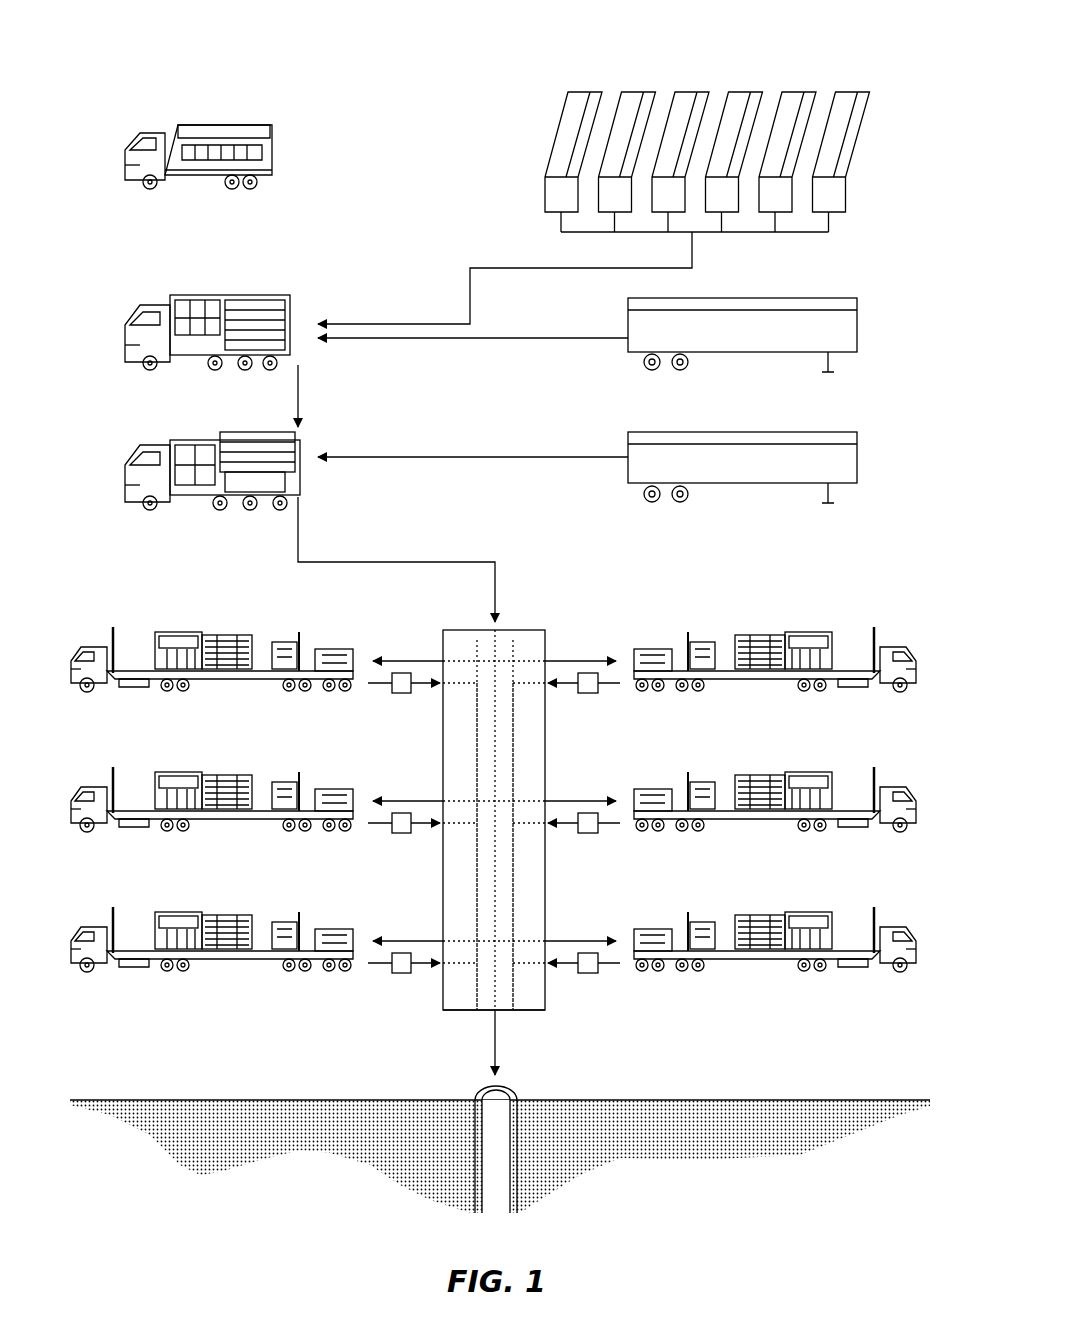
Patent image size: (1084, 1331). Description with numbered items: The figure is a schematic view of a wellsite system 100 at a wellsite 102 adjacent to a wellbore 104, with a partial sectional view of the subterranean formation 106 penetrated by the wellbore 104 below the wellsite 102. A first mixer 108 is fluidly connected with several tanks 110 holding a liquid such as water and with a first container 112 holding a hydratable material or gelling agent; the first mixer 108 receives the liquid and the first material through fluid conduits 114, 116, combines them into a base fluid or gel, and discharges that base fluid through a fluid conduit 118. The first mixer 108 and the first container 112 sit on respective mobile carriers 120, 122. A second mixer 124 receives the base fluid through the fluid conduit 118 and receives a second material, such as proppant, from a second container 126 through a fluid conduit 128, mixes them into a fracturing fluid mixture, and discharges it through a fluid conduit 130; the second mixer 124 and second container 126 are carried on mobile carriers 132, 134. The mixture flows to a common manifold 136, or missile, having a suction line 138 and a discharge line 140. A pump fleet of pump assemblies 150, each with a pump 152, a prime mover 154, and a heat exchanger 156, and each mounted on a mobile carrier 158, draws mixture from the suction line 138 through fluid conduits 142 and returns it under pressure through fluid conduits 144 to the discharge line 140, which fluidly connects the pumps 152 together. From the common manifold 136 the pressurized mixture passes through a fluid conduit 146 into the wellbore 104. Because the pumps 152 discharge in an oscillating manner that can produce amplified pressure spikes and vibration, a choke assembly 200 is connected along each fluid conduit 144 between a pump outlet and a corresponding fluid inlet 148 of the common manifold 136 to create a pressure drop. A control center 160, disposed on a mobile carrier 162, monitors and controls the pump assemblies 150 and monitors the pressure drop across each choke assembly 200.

The wellsite system 100 is at (155, 42).
The wellsite 102 is at (612, 572).
The wellbore 104 is at (500, 1165).
The subterranean formation 106 is at (300, 1146).
The first mixer 108 is at (250, 297).
The tanks 110 is at (852, 91).
The first container 112 is at (822, 297).
The fluid conduit 114 is at (384, 322).
The fluid conduit 116 is at (528, 336).
The fluid conduit 118 is at (301, 396).
The mobile carrier 120 is at (150, 305).
The mobile carrier 122 is at (682, 371).
The second mixer 124 is at (272, 430).
The second container 126 is at (822, 430).
The fluid conduit 128 is at (486, 455).
The fluid conduit 130 is at (396, 561).
The mobile carrier 132 is at (170, 447).
The mobile carrier 134 is at (682, 503).
The common manifold 136 is at (506, 629).
The suction line 138 is at (490, 648).
The discharge line 140 is at (490, 985).
The fluid conduits 142 is at (394, 660).
The fluid conduits 144 is at (372, 687).
The fluid conduits 146 is at (500, 1030).
The fluid inlet 148 is at (455, 690).
The pump assemblies 150 is at (499, 767).
The pump 152 is at (292, 646).
The prime mover 154 is at (232, 634).
The heat exchanger 156 is at (186, 632).
The mobile carriers 158 is at (109, 641).
The control center 160 is at (223, 126).
The mobile carrier 162 is at (165, 135).
The choke assemblies 200 is at (401, 694).